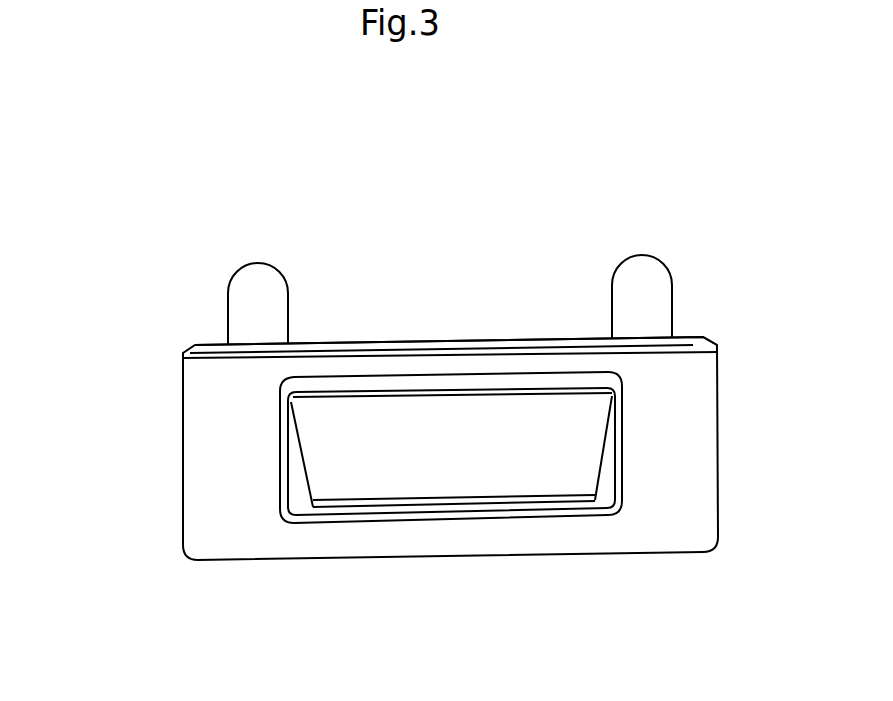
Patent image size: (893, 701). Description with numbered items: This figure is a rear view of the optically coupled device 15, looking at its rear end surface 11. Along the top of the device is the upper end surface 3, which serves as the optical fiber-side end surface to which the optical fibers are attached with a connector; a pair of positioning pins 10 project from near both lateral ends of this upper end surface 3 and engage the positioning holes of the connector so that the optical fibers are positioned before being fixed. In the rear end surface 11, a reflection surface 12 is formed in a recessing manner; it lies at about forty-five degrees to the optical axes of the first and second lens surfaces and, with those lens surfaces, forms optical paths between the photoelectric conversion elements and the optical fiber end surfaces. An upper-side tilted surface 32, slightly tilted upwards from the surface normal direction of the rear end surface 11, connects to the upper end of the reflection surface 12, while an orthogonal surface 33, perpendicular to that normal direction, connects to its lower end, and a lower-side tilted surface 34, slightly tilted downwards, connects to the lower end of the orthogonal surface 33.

The optically coupled device 15 is at (129, 189).
The positioning pins 10 is at (258, 263).
The upper end surface 3 is at (402, 343).
The rear end surface 11 is at (225, 432).
The reflection surface 12 is at (438, 440).
The upper-side tilted surface 32 is at (478, 397).
The orthogonal surface 33 is at (385, 503).
The lower-side tilted surface 34 is at (542, 508).